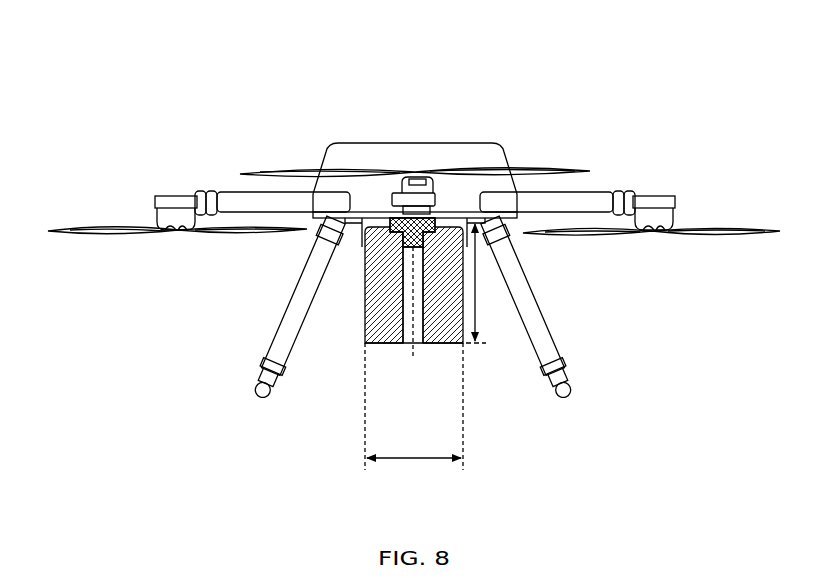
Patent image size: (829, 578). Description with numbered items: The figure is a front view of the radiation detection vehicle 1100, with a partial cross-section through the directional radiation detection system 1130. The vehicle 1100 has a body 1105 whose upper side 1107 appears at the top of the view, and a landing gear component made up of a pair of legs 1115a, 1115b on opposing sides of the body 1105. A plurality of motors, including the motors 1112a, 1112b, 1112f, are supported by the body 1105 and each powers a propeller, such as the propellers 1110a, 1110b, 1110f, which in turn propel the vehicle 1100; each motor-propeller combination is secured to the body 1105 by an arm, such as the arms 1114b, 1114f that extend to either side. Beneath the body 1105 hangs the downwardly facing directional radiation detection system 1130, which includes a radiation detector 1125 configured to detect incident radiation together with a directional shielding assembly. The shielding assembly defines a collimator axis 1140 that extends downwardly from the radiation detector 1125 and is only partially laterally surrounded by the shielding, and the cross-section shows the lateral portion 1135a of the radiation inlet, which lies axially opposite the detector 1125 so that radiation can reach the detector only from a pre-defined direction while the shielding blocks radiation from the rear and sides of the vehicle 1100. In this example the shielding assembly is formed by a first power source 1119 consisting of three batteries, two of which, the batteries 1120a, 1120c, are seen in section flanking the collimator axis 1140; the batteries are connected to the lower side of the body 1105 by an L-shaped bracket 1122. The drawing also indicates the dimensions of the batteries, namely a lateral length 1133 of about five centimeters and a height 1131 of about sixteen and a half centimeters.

The radiation detection vehicle 1100 is at (232, 89).
The body 1105 is at (368, 158).
The upper side 1107 is at (394, 128).
The propeller 1110a is at (520, 162).
The propeller 1110b is at (703, 234).
The propeller 1110f is at (112, 231).
The motor 1112a is at (418, 185).
The motor 1112b is at (665, 203).
The motor 1112f is at (168, 200).
The arm 1114b is at (585, 200).
The arm 1114f is at (248, 200).
The leg 1115a is at (287, 330).
The leg 1115b is at (540, 325).
The first power source 1119 is at (357, 352).
The battery 1120a is at (368, 307).
The battery 1120c is at (448, 310).
The L-shaped bracket 1122 is at (360, 226).
The radiation detector 1125 is at (411, 227).
The directional radiation detection system 1130 is at (432, 356).
The height 1131 is at (478, 284).
The lateral length 1133 is at (410, 460).
The lateral portion 1135a is at (407, 348).
The collimator axis 1140 is at (415, 262).